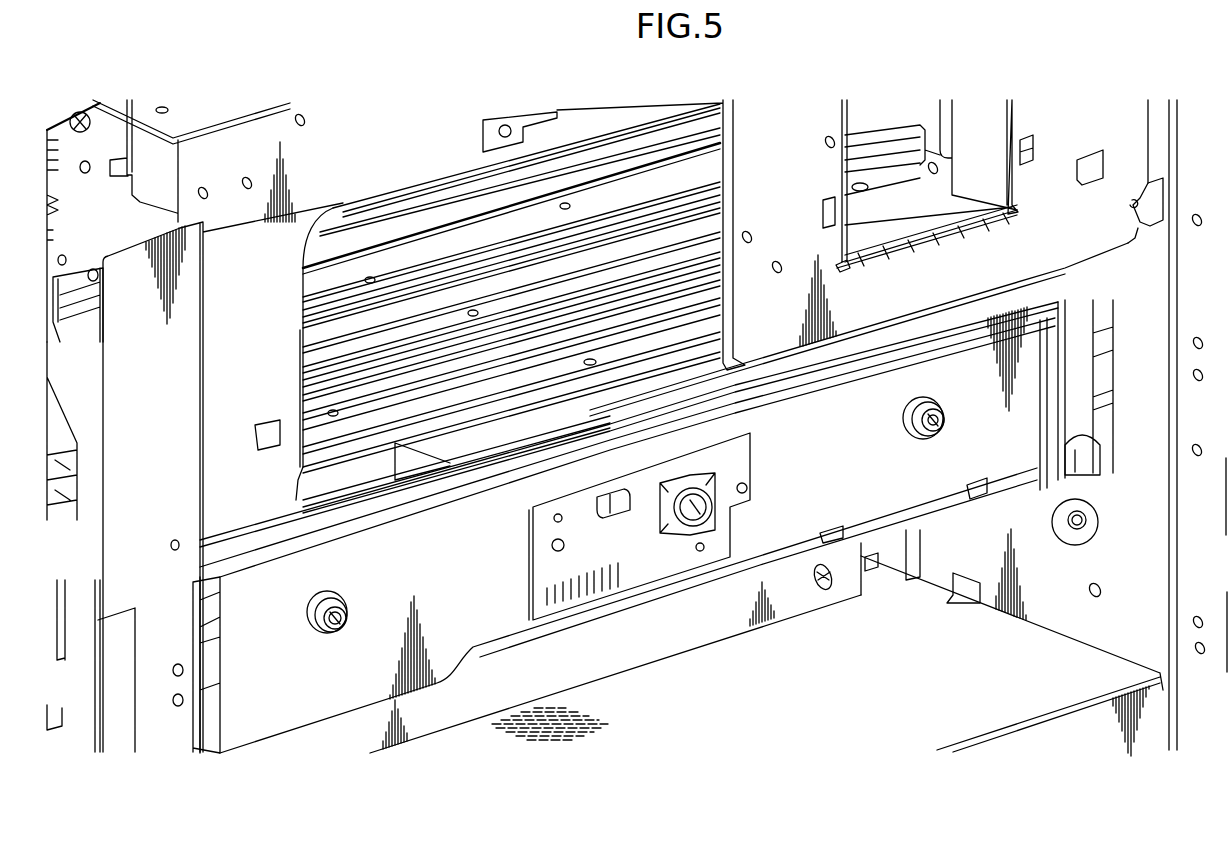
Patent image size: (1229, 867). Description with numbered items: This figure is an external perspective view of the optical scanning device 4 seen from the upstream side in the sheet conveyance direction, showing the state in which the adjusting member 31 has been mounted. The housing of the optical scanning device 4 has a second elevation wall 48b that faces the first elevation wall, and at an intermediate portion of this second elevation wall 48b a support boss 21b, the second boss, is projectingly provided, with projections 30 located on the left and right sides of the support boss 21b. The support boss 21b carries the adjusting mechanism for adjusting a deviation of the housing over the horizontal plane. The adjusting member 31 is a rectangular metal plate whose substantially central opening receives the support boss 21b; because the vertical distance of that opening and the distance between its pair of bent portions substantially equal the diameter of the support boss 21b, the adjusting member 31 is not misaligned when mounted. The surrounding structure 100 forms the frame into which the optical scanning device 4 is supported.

The image forming apparatus frame 100 is at (987, 103).
The optical scanning device 4 is at (430, 212).
The second elevation wall 48b is at (248, 712).
The projections 30 is at (347, 620).
The adjusting member 31 is at (652, 558).
The support boss 21b is at (710, 512).